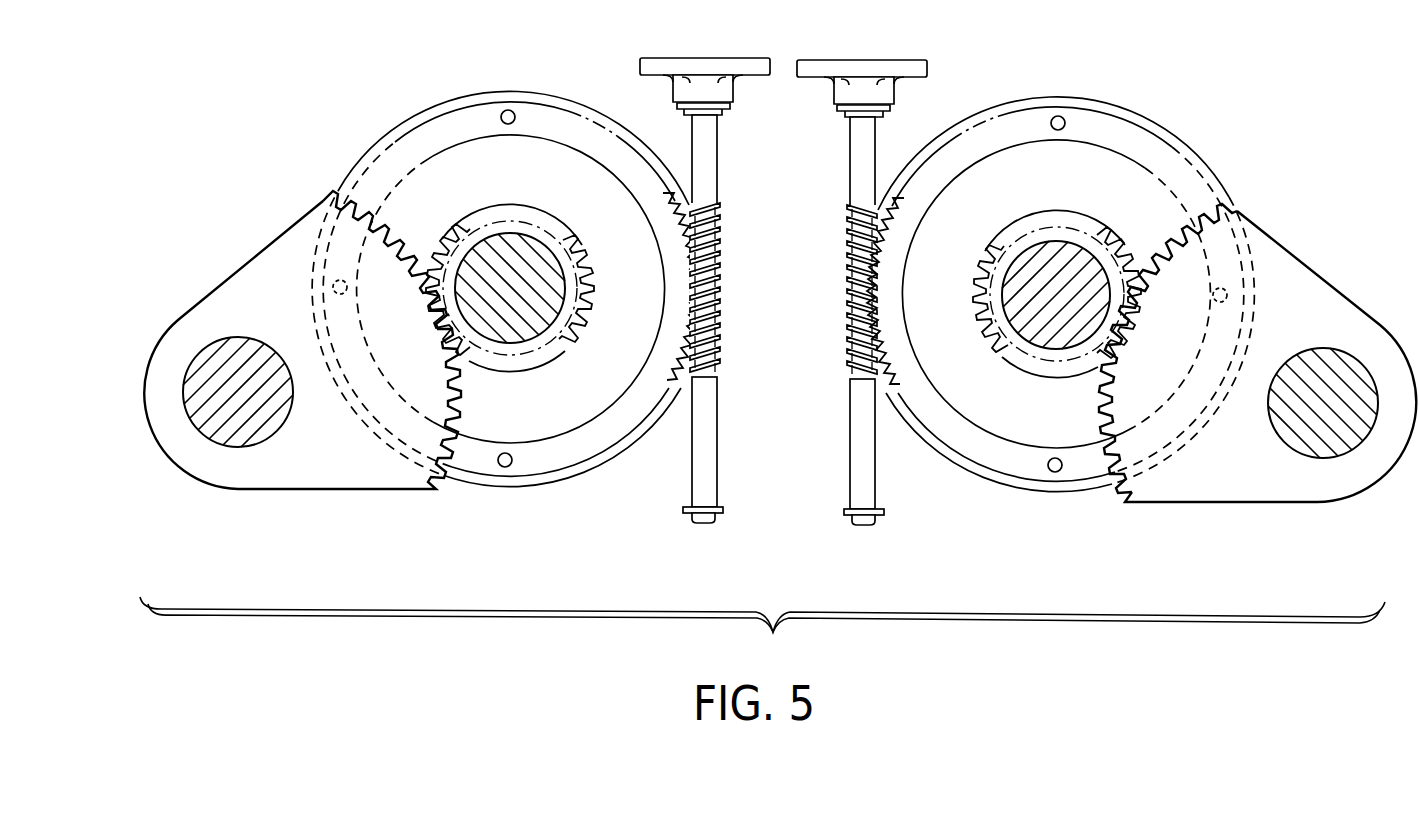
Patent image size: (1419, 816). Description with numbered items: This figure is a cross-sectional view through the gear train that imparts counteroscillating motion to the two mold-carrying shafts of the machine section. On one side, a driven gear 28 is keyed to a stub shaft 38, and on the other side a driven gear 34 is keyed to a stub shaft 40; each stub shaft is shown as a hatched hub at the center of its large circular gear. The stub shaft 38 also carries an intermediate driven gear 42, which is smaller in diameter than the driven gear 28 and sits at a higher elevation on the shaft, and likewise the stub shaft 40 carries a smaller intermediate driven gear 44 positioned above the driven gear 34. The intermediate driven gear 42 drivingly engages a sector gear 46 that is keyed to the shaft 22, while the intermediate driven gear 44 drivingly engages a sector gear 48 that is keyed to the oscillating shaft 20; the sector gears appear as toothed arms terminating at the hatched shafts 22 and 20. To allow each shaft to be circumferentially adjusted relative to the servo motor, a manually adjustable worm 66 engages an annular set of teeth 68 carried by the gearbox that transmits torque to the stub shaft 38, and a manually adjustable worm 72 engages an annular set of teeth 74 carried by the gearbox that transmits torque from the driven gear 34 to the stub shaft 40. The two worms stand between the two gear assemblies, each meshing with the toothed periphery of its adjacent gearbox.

The oscillating shaft 20 is at (1327, 450).
The shaft 22 is at (250, 437).
The driven gear 28 is at (520, 153).
The driven gear 34 is at (1078, 168).
The stub shaft 38 is at (509, 335).
The stub shaft 40 is at (1057, 335).
The intermediate driven gear 42 is at (563, 300).
The intermediate driven gear 44 is at (975, 290).
The sector gear 46 is at (255, 282).
The sector gear 48 is at (1277, 258).
The manually adjustable worm 66 is at (712, 188).
The annular set of teeth 68 is at (680, 387).
The manually adjustable worm 72 is at (857, 185).
The annular set of teeth 74 is at (884, 182).